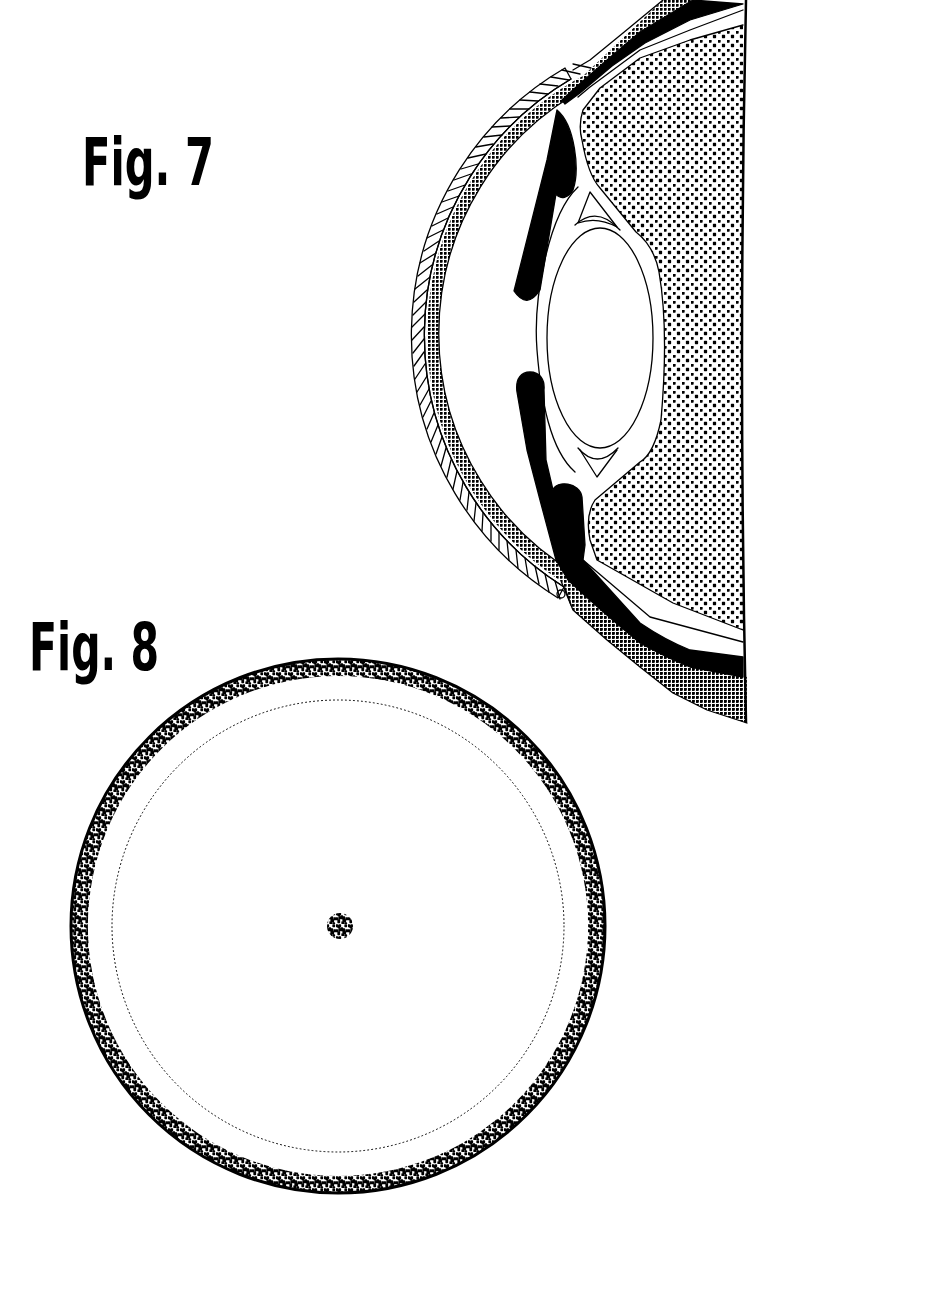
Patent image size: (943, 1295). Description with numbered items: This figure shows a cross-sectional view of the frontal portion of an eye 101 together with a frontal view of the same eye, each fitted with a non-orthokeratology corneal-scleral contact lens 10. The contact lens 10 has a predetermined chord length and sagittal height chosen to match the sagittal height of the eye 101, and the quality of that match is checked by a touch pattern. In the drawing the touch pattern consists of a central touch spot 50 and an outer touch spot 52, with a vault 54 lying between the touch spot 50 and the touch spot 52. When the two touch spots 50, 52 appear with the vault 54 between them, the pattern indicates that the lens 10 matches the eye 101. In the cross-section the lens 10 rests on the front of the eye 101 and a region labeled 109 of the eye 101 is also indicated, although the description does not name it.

In FIG. 7, the corneal-scleral contact lens 10 is at (442, 336).
In FIG. 8, the corneal-scleral contact lens 10 is at (384, 926).
In FIG. 7, the touch spot 50 is at (430, 345).
In FIG. 8, the touch spot 50 is at (346, 925).
In FIG. 7, the touch spot 52 is at (556, 597).
In FIG. 8, the touch spot 52 is at (596, 970).
In FIG. 7, the vault 54 is at (465, 471).
In FIG. 8, the vault 54 is at (461, 1035).
In FIG. 7, the eye 101 is at (757, 265).
In FIG. 7, the sclera 109 is at (730, 700).